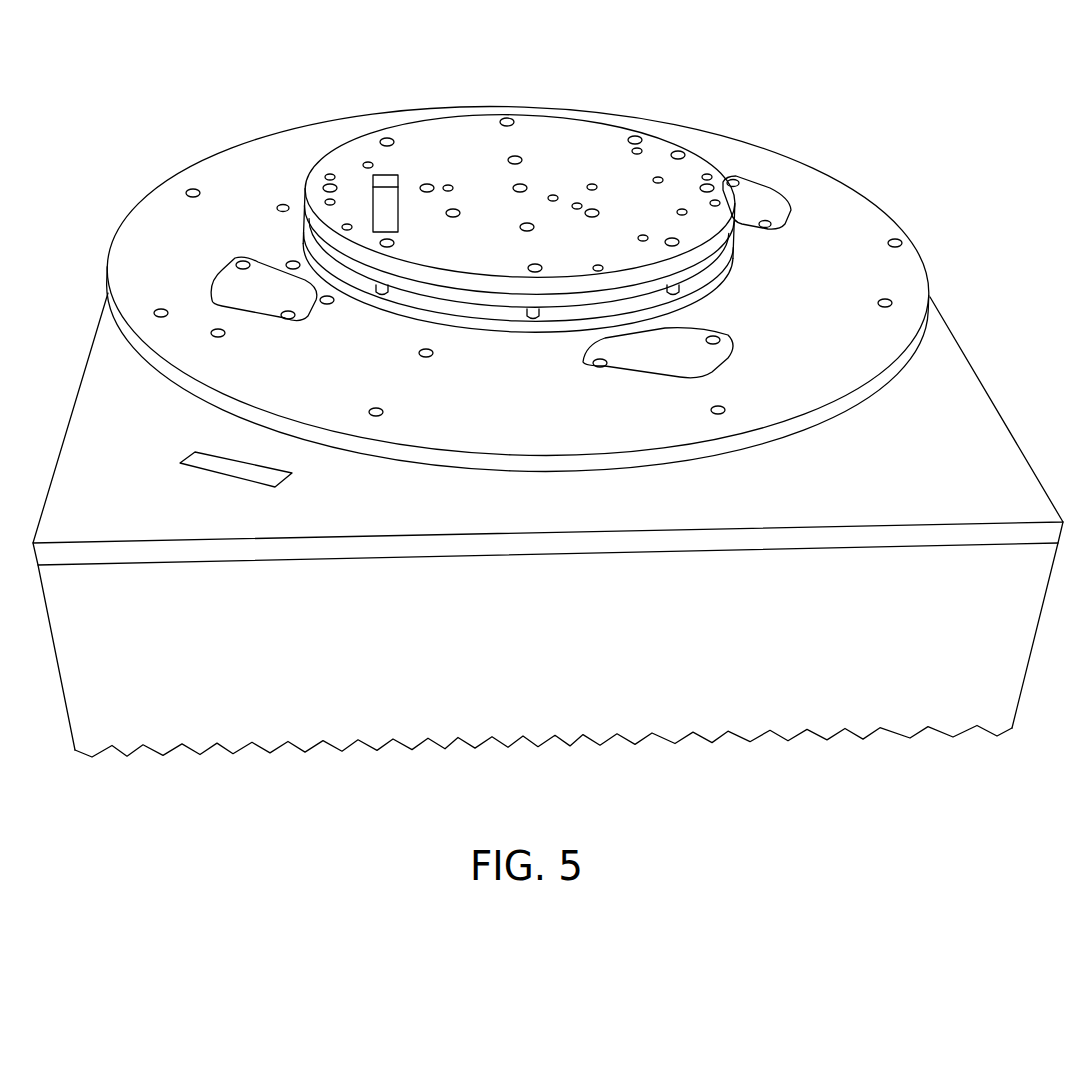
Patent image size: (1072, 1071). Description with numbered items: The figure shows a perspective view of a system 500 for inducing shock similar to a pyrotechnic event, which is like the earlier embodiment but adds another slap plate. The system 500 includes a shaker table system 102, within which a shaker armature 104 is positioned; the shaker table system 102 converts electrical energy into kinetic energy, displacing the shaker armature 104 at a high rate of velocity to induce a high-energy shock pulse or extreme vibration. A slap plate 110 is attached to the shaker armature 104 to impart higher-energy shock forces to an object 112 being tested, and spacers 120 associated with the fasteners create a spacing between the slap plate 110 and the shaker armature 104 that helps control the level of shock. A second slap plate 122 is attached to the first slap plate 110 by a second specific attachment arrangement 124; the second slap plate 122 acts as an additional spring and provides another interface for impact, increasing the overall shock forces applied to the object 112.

The system for inducing shock similar to a pyrotechnic event 500 is at (548, 406).
The shaker table system 102 is at (920, 262).
The shaker armature 104 is at (390, 310).
The slap plate 110 is at (712, 265).
The object 112 is at (387, 180).
The spacer 120 is at (533, 322).
The second slap plate 122 is at (312, 230).
The second specific attachment arrangement 124 is at (539, 115).